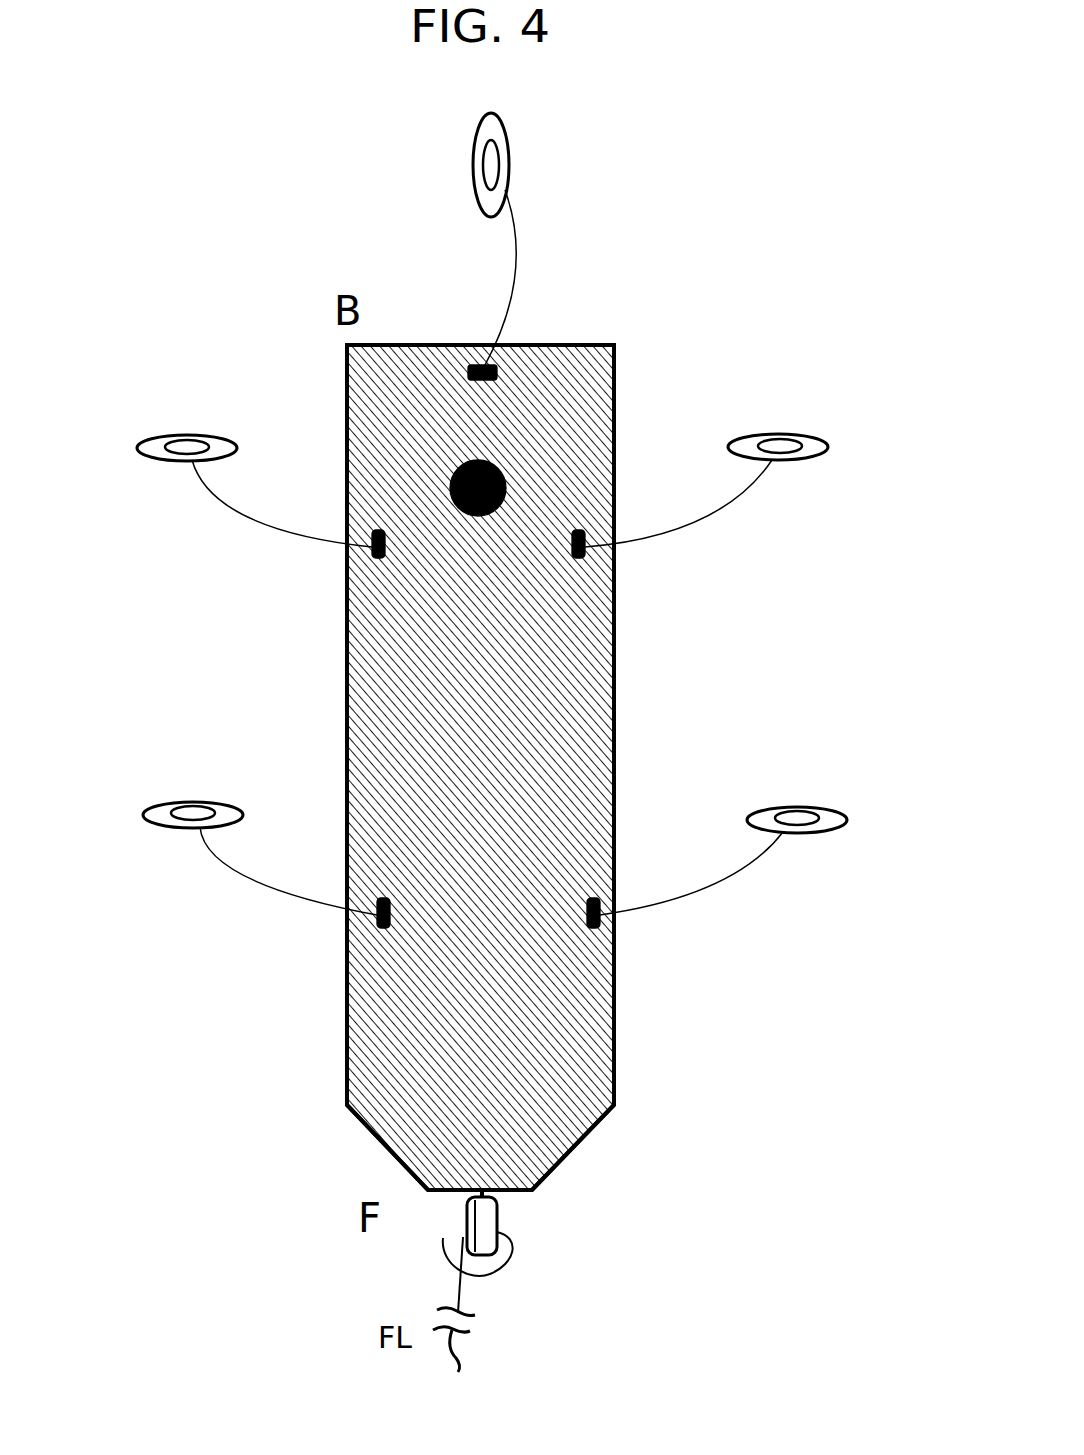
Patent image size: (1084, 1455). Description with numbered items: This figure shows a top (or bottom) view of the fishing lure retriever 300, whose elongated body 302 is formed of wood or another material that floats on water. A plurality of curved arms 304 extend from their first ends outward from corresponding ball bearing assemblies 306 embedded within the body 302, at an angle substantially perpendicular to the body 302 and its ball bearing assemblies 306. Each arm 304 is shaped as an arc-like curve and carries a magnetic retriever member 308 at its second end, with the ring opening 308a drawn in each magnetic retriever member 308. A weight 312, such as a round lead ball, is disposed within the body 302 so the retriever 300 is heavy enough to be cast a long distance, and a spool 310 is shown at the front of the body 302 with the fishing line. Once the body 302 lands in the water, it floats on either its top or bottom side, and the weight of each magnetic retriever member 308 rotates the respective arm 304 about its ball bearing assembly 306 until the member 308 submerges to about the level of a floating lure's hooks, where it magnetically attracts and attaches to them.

The fishing lure retriever 300 is at (640, 332).
The body 302 is at (455, 845).
The curved arm 304 is at (520, 248).
The ball bearing assembly 306 is at (374, 525).
The magnetic retriever member 308 is at (478, 198).
The ring opening 308a is at (487, 172).
The spool 310 is at (462, 1213).
The weight 312 is at (458, 518).